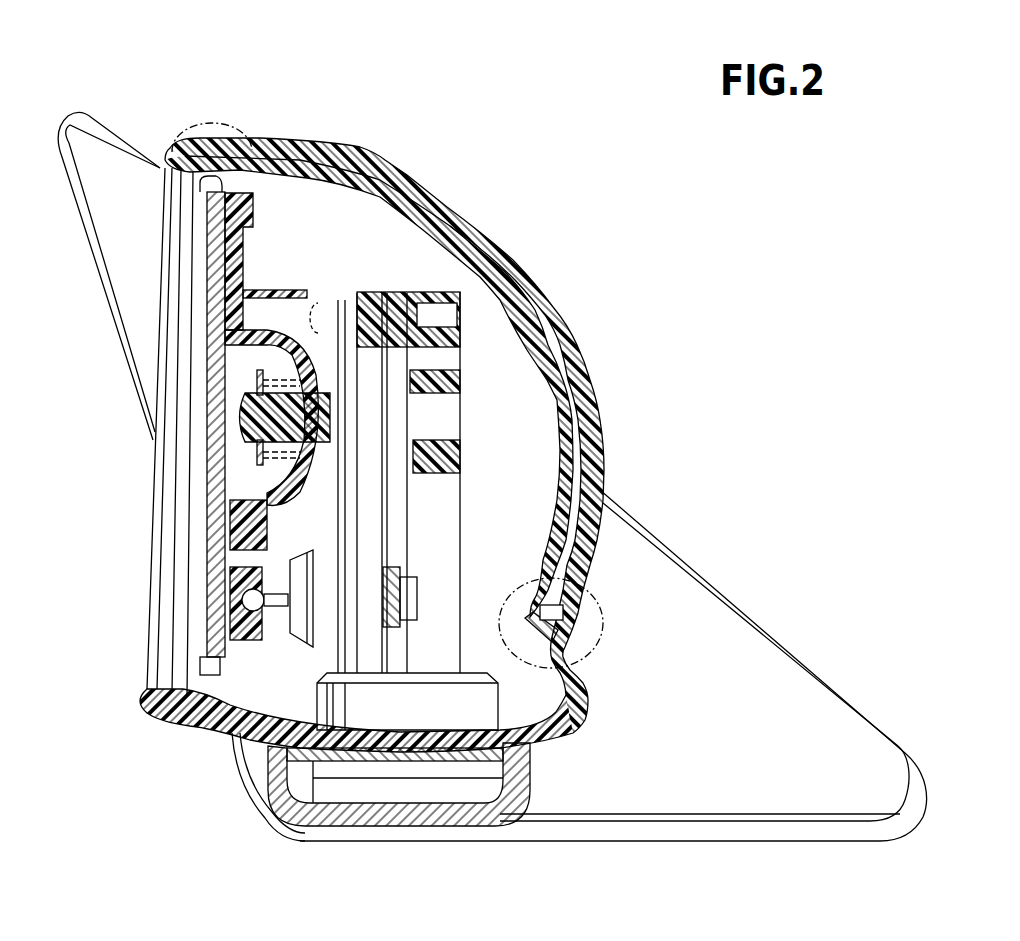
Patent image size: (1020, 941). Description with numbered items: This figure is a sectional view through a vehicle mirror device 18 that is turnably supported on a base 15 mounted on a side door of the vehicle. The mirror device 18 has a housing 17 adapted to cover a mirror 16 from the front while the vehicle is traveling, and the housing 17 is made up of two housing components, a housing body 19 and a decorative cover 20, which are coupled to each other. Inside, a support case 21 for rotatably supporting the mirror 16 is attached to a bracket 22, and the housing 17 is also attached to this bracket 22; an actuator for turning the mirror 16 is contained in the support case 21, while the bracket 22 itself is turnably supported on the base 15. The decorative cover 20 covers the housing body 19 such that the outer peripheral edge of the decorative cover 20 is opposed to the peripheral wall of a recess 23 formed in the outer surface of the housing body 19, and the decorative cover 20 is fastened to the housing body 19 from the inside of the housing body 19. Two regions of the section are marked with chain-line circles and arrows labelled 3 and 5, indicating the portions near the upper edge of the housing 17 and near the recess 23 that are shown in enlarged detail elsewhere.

The detail region of FIG. 3 is at (250, 124).
The detail region of FIG. 5 is at (603, 650).
The base 15 is at (737, 653).
The mirror 16 is at (213, 504).
The housing 17 is at (586, 181).
The mirror device 18 is at (128, 658).
The housing body 19 is at (443, 230).
The decorative cover 20 is at (503, 277).
The support case 21 is at (349, 510).
The bracket 22 is at (385, 290).
The recess 23 is at (567, 603).